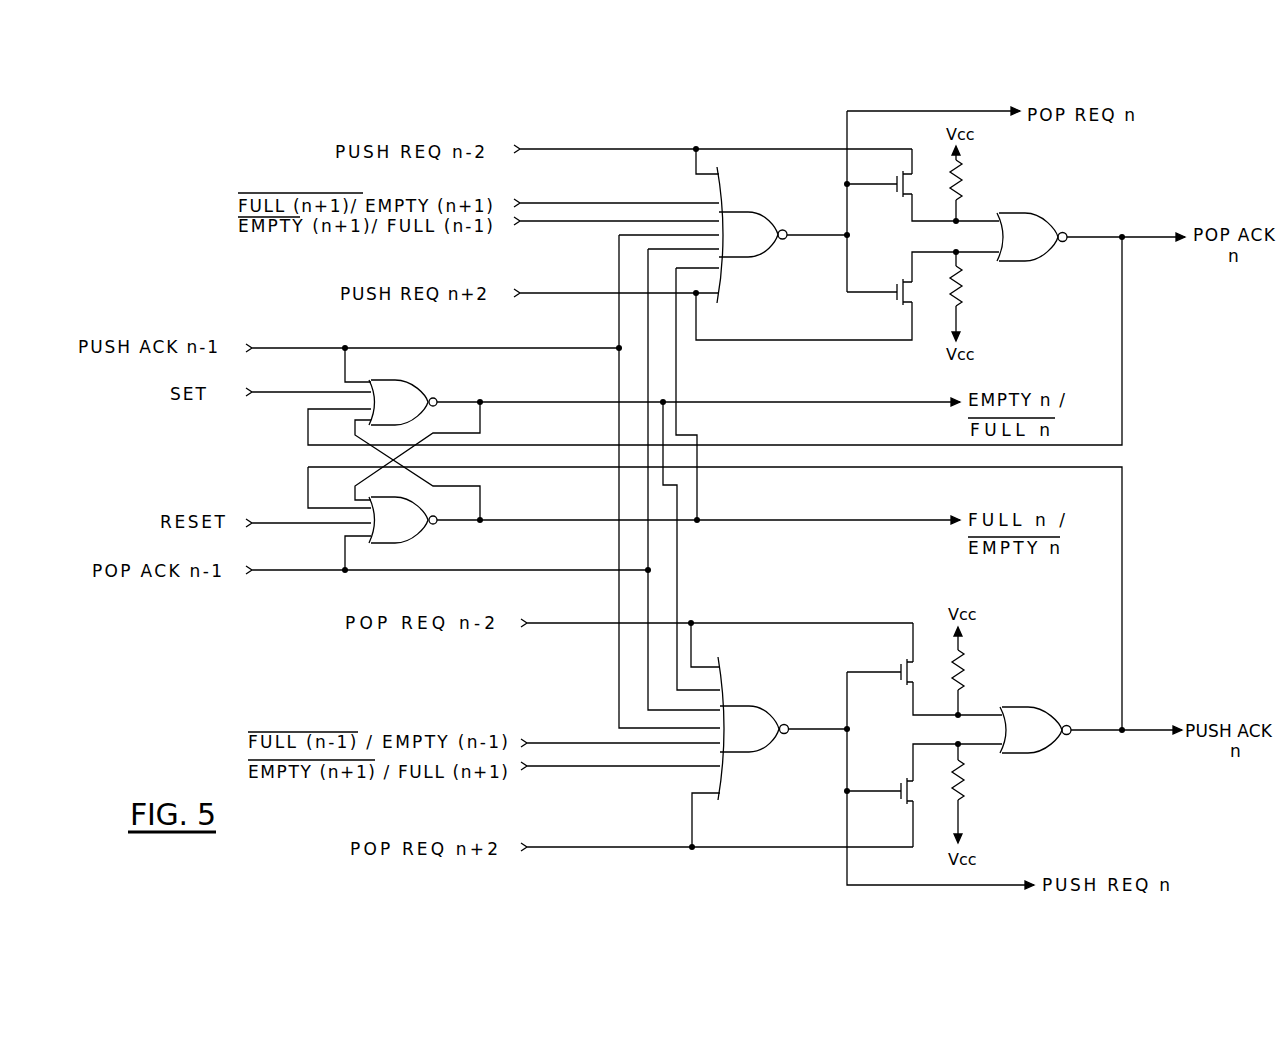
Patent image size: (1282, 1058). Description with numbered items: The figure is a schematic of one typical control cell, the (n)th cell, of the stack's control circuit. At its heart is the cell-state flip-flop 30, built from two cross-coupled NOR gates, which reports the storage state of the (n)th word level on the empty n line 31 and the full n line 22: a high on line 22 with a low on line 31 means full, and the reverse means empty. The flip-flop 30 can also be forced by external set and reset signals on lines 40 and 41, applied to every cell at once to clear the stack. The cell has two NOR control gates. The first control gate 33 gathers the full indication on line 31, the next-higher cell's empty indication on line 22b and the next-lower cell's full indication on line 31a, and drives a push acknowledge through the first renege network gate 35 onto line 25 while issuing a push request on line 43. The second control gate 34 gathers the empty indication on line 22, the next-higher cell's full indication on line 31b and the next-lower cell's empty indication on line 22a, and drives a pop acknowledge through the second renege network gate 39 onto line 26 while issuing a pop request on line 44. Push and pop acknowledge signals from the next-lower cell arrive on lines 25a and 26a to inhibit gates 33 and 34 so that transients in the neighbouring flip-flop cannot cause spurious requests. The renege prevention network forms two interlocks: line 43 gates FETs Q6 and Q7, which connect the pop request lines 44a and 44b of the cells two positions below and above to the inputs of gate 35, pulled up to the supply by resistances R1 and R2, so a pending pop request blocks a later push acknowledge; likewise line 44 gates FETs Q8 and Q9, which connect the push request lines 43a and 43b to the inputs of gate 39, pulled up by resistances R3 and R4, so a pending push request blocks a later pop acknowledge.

The push request line 43a is at (614, 148).
The line 31b is at (580, 202).
The line 22a is at (596, 222).
The push request line 43b is at (597, 294).
The second control gate 34 is at (753, 213).
The pop request line 44 is at (918, 112).
The second renege network gate 39 is at (1028, 213).
The line 26 is at (1172, 238).
The line 25a is at (280, 348).
The line 40 is at (274, 392).
The line 41 is at (262, 523).
The cell-state flip-flop 30 is at (514, 362).
The line 31 is at (820, 402).
The line 22 is at (677, 378).
The line 26a is at (272, 574).
The pop request line 44a is at (591, 622).
The line 31a is at (545, 743).
The line 22b is at (545, 767).
The pop request line 44b is at (551, 847).
The first control gate 33 is at (760, 707).
The first renege network gate 35 is at (1035, 707).
The line 25 is at (1163, 729).
The push request line 43 is at (942, 885).
The FET Q6 is at (951, 688).
The FET Q7 is at (951, 772).
The FET Q8 is at (948, 186).
The FET Q9 is at (948, 277).
The resistance R1 is at (971, 671).
The resistance R2 is at (971, 793).
The resistance R3 is at (970, 183).
The resistance R4 is at (970, 296).